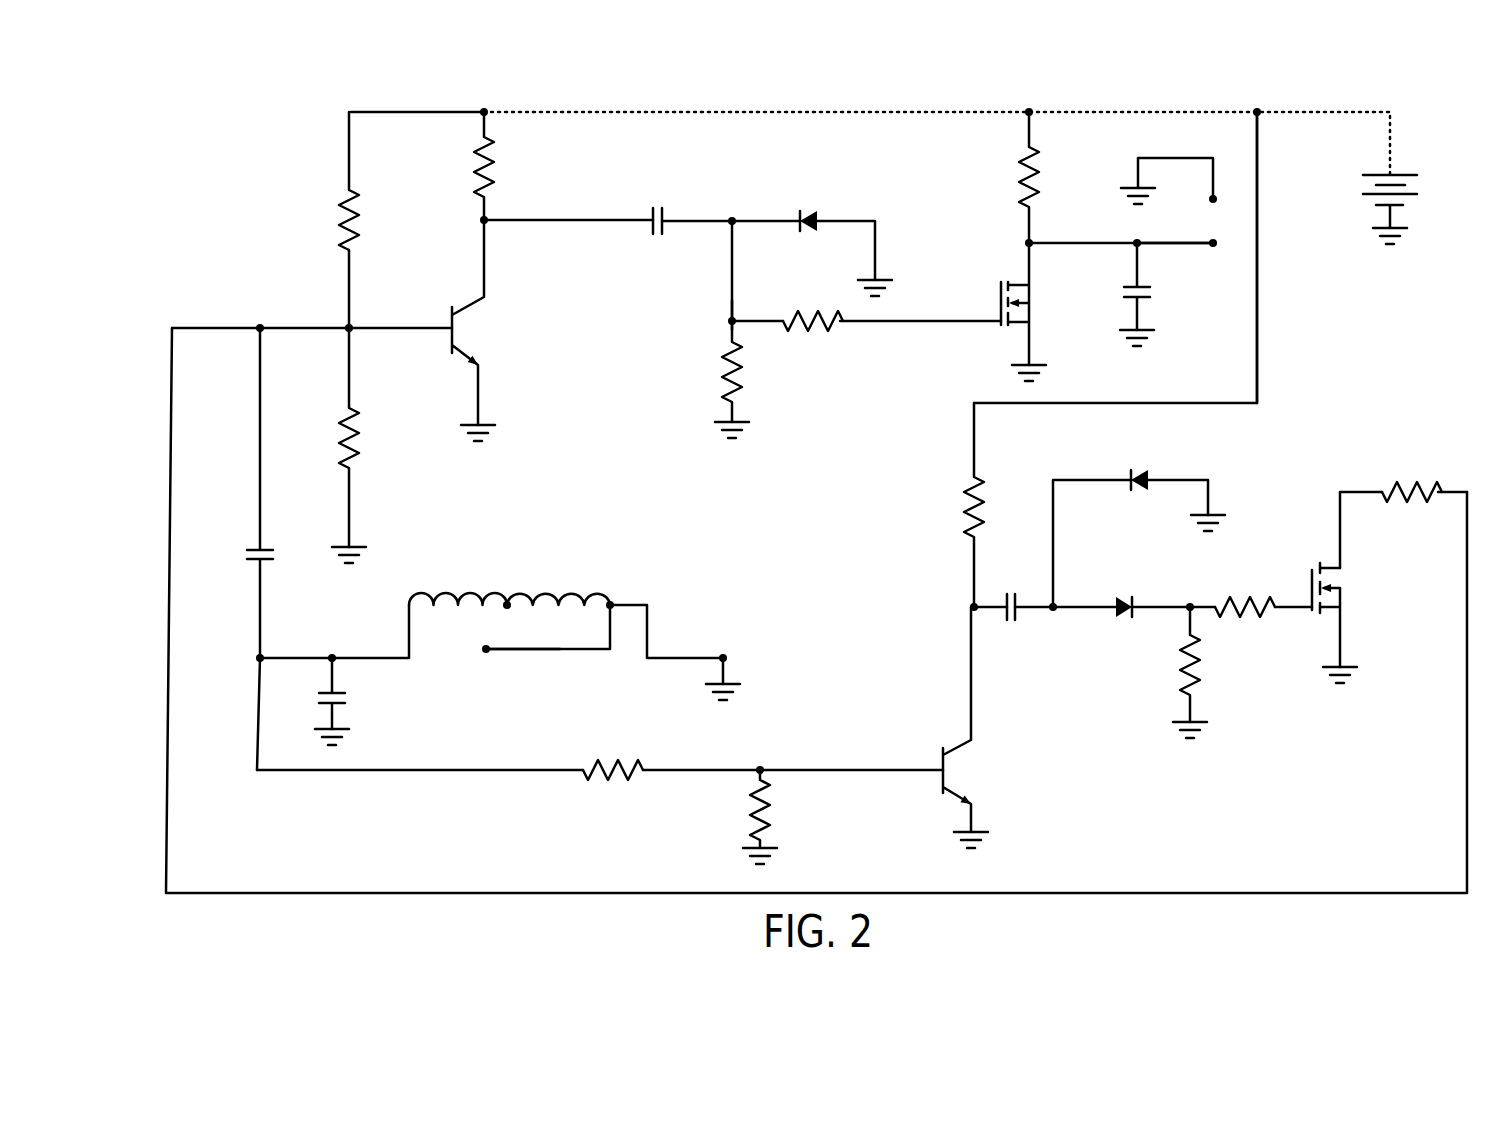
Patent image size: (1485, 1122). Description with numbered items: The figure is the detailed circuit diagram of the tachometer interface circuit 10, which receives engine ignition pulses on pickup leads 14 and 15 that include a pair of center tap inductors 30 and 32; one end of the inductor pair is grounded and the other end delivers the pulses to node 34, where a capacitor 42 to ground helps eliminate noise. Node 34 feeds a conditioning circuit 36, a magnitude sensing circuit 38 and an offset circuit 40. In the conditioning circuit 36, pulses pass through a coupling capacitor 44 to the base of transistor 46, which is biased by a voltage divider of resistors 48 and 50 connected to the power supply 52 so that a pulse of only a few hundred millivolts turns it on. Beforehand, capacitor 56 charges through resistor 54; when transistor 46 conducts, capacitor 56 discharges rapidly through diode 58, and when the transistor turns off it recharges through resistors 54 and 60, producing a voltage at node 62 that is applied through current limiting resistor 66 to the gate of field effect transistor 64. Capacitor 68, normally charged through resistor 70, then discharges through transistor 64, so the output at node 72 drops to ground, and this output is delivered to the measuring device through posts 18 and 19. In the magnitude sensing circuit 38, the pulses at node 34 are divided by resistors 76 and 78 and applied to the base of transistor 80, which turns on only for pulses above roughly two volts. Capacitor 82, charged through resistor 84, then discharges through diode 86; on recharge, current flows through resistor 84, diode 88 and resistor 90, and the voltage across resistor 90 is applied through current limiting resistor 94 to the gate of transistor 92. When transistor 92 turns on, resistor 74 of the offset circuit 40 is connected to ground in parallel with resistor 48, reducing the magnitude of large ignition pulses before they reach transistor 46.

The tachometer interface circuit 10 is at (1236, 96).
The pickup lead 14 is at (487, 655).
The pickup lead 15 is at (508, 601).
The post 18 is at (1213, 243).
The post 19 is at (1213, 199).
The center tap inductor 30 is at (444, 600).
The center tap inductor 32 is at (586, 600).
The node 34 is at (261, 657).
The conditioning circuit 36 is at (537, 359).
The magnitude sensing circuit 38 is at (836, 702).
The offset circuit 40 is at (1283, 664).
The capacitor 42 is at (341, 694).
The coupling capacitor 44 is at (262, 548).
The transistor 46 is at (463, 352).
The resistor 48 is at (357, 447).
The resistor 50 is at (356, 208).
The power supply 52 is at (1403, 172).
The resistor 54 is at (491, 179).
The capacitor 56 is at (666, 214).
The diode 58 is at (811, 213).
The resistor 60 is at (741, 380).
The node 62 is at (736, 321).
The transistor 64 is at (1032, 318).
The current limiting resistor 66 is at (818, 333).
The capacitor 68 is at (1151, 290).
The resistor 70 is at (1036, 190).
The node 72 is at (1213, 243).
The resistor 74 is at (1411, 484).
The resistor 76 is at (596, 765).
The resistor 78 is at (769, 822).
The transistor 80 is at (951, 789).
The capacitor 82 is at (1019, 615).
The resistor 84 is at (986, 488).
The diode 86 is at (1139, 473).
The diode 88 is at (1125, 615).
The resistor 90 is at (1201, 678).
The transistor 92 is at (1346, 593).
The current limiting resistor 94 is at (1229, 600).